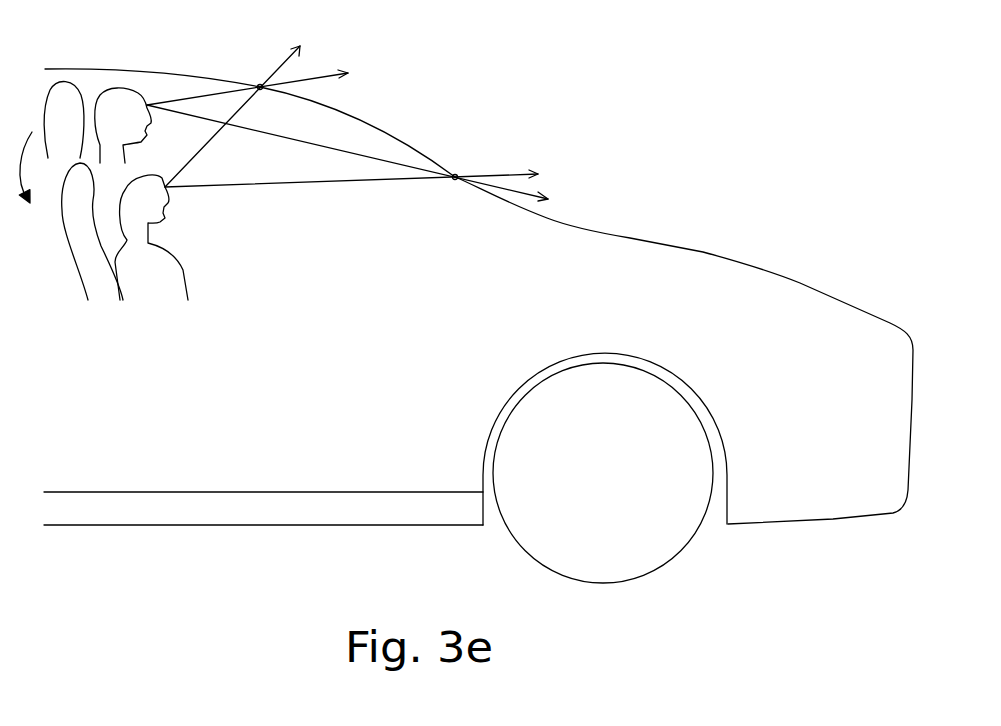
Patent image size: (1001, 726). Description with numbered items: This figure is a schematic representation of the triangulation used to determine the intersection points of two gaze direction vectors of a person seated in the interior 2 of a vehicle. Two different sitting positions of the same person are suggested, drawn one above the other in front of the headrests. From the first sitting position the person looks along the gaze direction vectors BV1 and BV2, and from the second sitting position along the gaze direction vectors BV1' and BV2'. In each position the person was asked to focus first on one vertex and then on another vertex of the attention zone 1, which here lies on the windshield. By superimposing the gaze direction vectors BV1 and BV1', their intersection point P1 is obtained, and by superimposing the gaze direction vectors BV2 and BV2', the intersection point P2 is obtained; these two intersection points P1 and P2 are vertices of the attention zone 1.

The attention zone 1 is at (391, 133).
The interior 2 is at (62, 73).
The vertex P1 of the attention zone P1 is at (255, 72).
The vertex P2 of the attention zone P2 is at (458, 161).
The gaze direction vector BV1 is at (247, 87).
The gaze direction vector BV1' is at (230, 116).
The gaze direction vector BV2 is at (347, 153).
The gaze direction vector BV2' is at (351, 175).